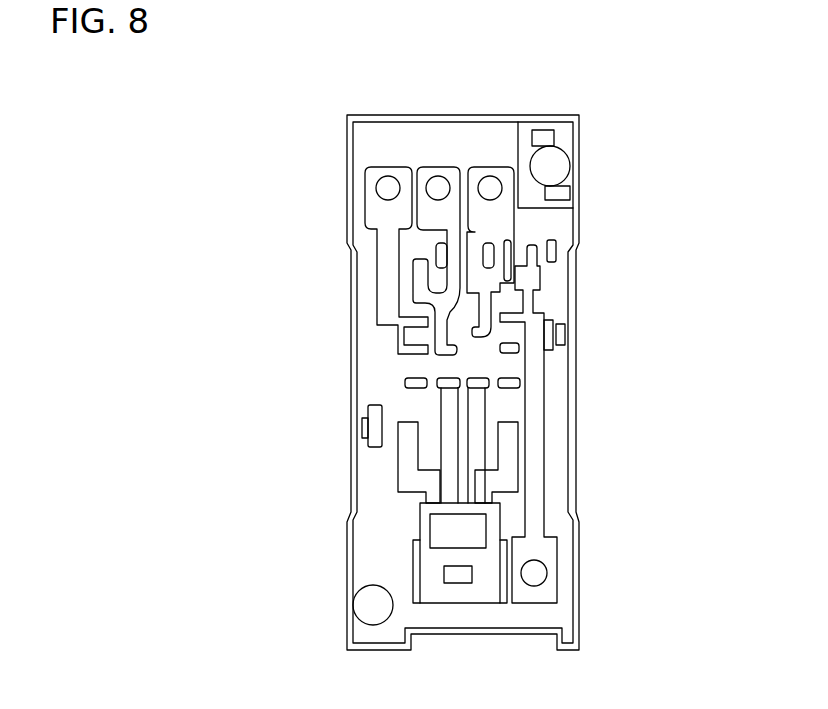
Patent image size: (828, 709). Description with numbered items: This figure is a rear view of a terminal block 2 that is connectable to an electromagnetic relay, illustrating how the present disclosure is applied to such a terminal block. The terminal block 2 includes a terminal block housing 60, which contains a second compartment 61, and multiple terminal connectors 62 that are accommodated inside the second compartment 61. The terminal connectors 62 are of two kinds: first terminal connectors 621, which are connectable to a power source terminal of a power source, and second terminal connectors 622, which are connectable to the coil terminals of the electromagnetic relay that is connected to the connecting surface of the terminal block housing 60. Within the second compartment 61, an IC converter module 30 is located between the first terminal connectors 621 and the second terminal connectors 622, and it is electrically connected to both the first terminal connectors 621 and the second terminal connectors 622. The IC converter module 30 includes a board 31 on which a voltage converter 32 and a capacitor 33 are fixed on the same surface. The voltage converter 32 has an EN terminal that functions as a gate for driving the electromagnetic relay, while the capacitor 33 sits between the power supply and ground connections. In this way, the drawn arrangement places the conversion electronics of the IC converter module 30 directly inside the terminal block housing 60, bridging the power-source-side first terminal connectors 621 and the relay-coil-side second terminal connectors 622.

The terminal block 2 is at (622, 168).
The terminal block housing 60 is at (347, 157).
The second compartment 61 is at (377, 348).
The terminal connectors 62 is at (436, 170).
The first terminal connectors 621 is at (417, 572).
The second terminal connectors 622 is at (408, 457).
The IC converter module 30 is at (418, 528).
The board 31 is at (478, 590).
The voltage converter 32 is at (478, 522).
The capacitor 33 is at (458, 576).